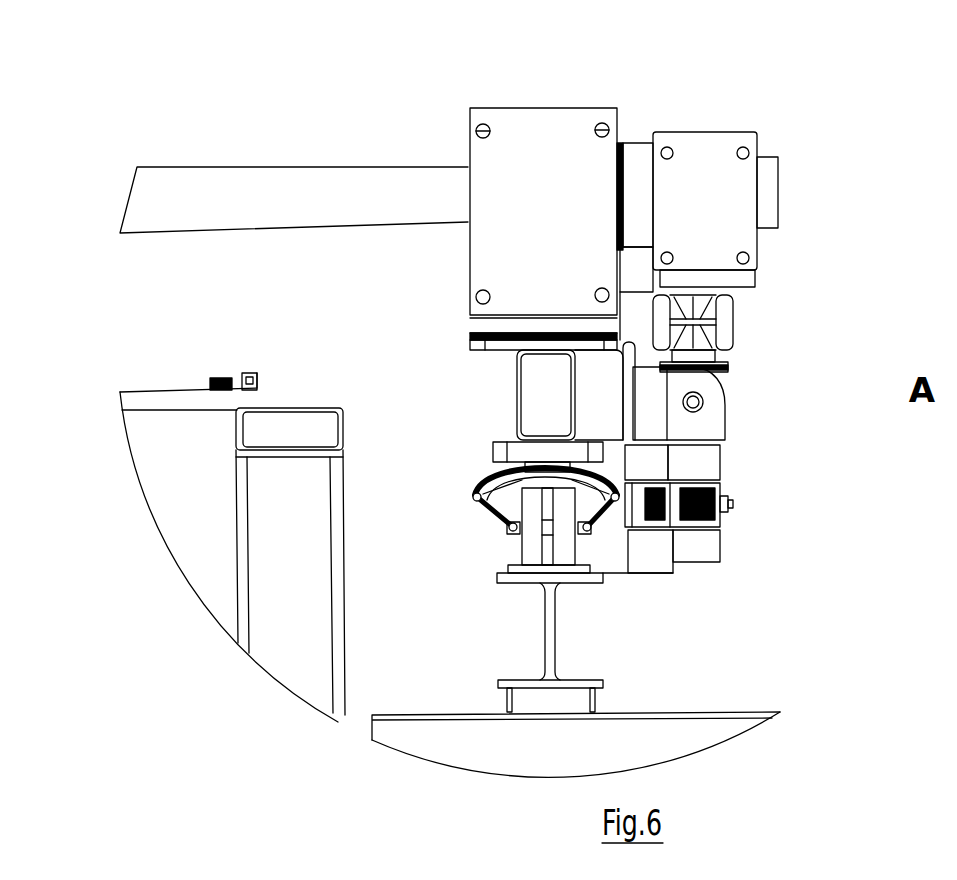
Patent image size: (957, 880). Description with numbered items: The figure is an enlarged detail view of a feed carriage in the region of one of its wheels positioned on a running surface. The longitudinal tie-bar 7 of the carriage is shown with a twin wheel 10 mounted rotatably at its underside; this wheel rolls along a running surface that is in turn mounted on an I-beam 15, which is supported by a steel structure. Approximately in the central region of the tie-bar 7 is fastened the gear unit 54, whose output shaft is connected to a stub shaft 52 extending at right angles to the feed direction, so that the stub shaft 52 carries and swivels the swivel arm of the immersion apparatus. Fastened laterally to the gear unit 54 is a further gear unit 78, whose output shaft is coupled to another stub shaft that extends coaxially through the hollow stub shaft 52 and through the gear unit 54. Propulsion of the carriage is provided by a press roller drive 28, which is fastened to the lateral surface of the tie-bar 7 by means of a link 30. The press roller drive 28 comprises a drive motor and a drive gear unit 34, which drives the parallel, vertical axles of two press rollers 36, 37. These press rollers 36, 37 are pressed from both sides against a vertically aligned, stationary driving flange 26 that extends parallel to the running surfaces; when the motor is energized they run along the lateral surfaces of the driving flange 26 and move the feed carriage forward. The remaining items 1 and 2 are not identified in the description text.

The base plate 1 is at (693, 748).
The shroud housing 2 is at (190, 484).
The longitudinal tie-bar 7 is at (530, 380).
The twin wheel 10 is at (530, 515).
The I-beam 15 is at (552, 640).
The driving flange 26 is at (715, 548).
The press roller drive 28 is at (766, 315).
The link 30 is at (708, 388).
The drive gear unit 34 is at (718, 432).
The press roller 36 is at (700, 550).
The press roller 37 is at (652, 545).
The stub shaft 52 is at (276, 190).
The gear unit 54 is at (523, 155).
The further gear unit 78 is at (697, 162).